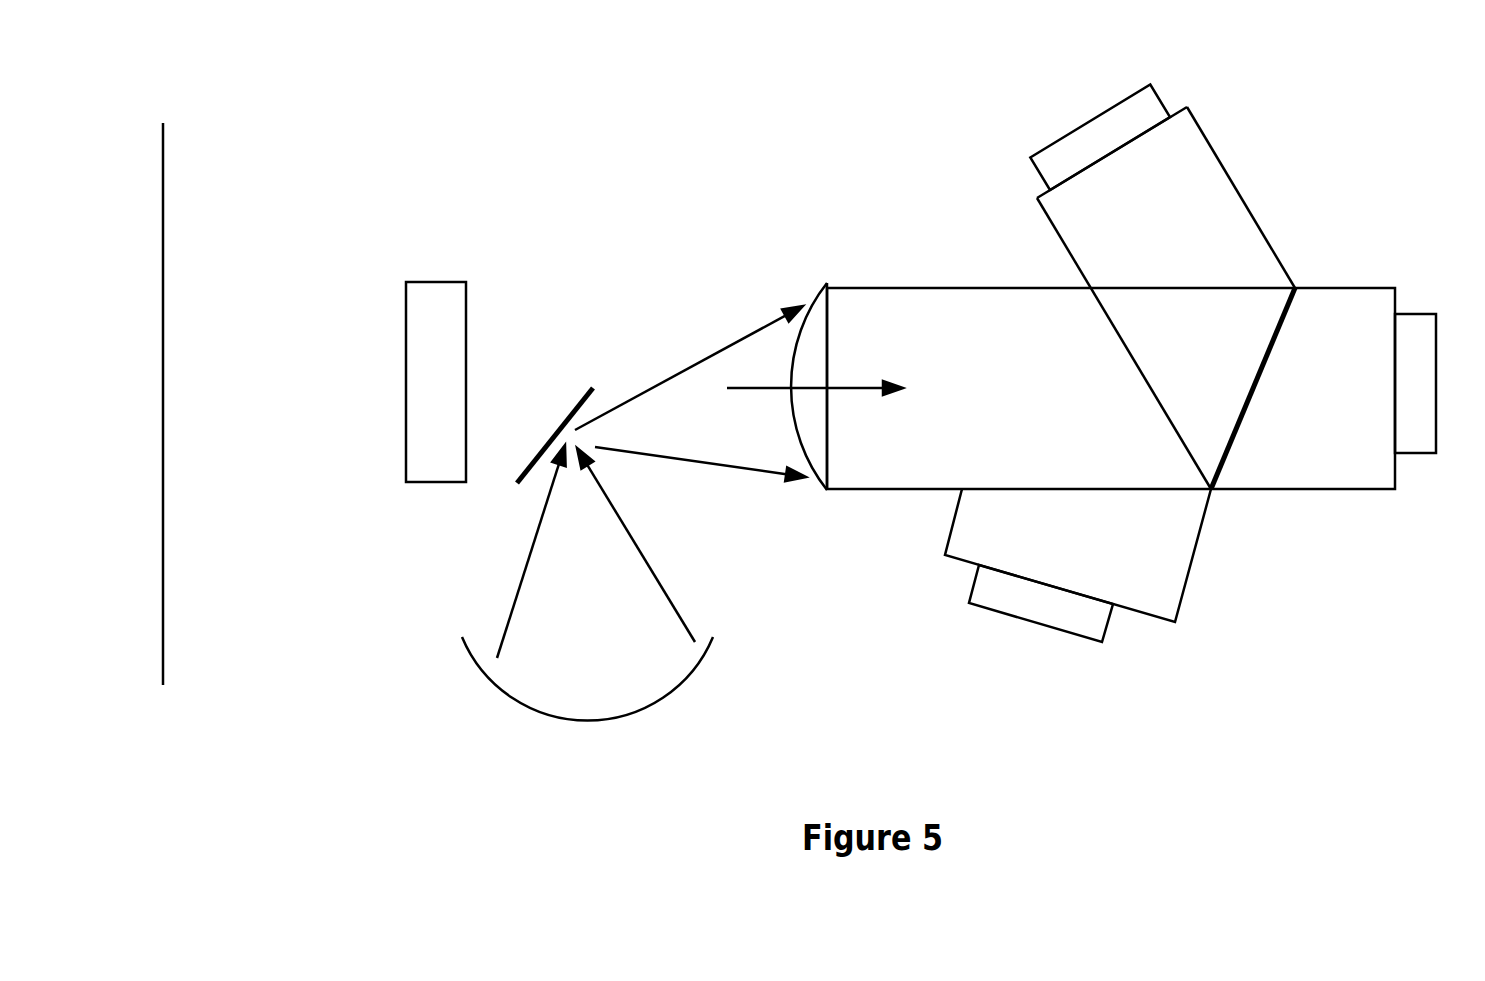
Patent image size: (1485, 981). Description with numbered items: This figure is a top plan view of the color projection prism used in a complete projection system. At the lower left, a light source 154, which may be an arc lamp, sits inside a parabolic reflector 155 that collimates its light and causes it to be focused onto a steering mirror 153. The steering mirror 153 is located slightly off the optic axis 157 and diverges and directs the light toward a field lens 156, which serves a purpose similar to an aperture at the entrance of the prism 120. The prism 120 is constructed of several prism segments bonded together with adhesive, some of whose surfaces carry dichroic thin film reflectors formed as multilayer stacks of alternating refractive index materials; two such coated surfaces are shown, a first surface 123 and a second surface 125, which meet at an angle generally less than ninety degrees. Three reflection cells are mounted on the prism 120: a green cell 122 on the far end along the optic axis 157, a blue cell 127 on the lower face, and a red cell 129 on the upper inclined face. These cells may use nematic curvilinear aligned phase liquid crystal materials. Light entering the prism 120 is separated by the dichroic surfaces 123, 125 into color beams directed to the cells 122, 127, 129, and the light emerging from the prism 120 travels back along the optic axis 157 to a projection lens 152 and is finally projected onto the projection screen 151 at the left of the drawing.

The prism 120 is at (1366, 551).
The first reflection cell 122 is at (1407, 310).
The first surface 123 is at (1100, 303).
The second surface 125 is at (1265, 368).
The second reflection cell 127 is at (1045, 627).
The third reflection cell 129 is at (1055, 135).
The projection screen 151 is at (166, 388).
The projection lens 152 is at (436, 363).
The steering mirror 153 is at (563, 418).
The light source 154 is at (577, 669).
The parabolic reflector 155 is at (587, 679).
The field lens 156 is at (813, 302).
The optic axis 157 is at (732, 390).